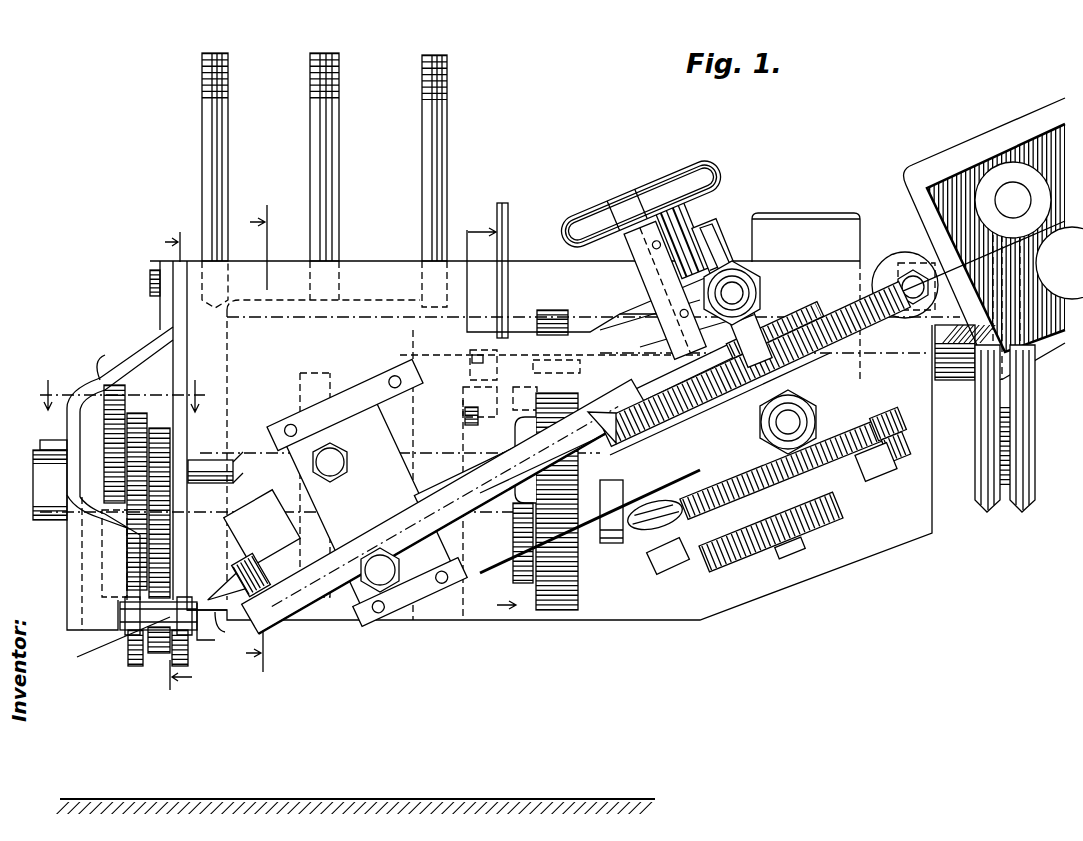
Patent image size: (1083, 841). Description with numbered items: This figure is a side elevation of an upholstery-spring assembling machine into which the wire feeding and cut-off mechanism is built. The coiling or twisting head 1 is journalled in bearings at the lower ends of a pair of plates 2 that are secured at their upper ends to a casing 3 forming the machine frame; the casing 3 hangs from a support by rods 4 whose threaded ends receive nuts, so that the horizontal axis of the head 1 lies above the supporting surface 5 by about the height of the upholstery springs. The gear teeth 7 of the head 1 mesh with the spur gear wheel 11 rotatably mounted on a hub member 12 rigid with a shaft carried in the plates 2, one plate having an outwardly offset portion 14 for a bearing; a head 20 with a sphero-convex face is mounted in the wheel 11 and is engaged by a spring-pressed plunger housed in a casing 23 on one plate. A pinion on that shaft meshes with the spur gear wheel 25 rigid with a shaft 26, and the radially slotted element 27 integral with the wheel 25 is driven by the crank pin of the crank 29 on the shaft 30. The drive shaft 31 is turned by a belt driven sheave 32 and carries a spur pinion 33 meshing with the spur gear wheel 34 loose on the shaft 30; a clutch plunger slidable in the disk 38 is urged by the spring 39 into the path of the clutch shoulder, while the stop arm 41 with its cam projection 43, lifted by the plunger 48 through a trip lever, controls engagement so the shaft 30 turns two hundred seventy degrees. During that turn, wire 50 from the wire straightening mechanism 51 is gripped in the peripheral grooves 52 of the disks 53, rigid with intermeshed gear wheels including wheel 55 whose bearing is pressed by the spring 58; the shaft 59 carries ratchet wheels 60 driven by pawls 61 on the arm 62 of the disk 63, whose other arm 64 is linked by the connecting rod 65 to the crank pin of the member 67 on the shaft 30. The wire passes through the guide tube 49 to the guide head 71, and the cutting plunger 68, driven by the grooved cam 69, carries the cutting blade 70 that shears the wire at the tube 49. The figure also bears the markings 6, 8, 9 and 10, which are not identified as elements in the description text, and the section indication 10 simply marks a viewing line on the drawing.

The coiling or twisting head 1 is at (110, 616).
The plates 2 is at (163, 326).
The casing 3 is at (515, 622).
The rods 4 is at (575, 408).
The supporting surface 5 is at (450, 799).
The bracket 6 is at (206, 628).
The gear teeth 7 is at (150, 665).
The section line 8 is at (248, 438).
The guide rods 9 is at (228, 110).
The section line 10 is at (186, 457).
The spur gear wheel 11 is at (170, 565).
The hub member 12 is at (119, 398).
The outwardly offset portion 14 is at (65, 428).
The head 20 is at (175, 465).
The casing 23 is at (222, 455).
The spur gear wheel 25 is at (100, 360).
The shaft 26 is at (114, 444).
The radially slotted element 27 is at (140, 420).
The crank 29 is at (102, 555).
The shaft 30 is at (33, 488).
The drive shaft 31 is at (598, 322).
The belt driven sheave 32 is at (1035, 447).
The spur pinion 33 is at (560, 308).
The spur gear wheel 34 is at (578, 592).
The disk 38 is at (512, 570).
The spring 39 is at (462, 407).
The stop arm 41 is at (497, 372).
The cam projection 43 is at (495, 445).
The plunger 48 is at (508, 230).
The guide tube 49 is at (385, 505).
The wire 50 is at (77, 657).
The wire straightening mechanism 51 is at (985, 148).
The peripheral grooves 52 is at (785, 342).
The disks 53 is at (645, 408).
The spur-gear wheel 55 is at (720, 404).
The spring 58 is at (760, 292).
The shaft 59 is at (795, 553).
The ratchet wheels 60 is at (768, 555).
The pawls 61 is at (900, 418).
The arm 62 is at (866, 480).
The disk 63 is at (720, 525).
The arm 64 is at (653, 556).
The connecting rod 65 is at (655, 502).
The member 67 is at (603, 545).
The cutting plunger 68 is at (345, 558).
The grooved cam 69 is at (330, 372).
The cutting blade 70 is at (238, 602).
The guide head 71 is at (226, 632).